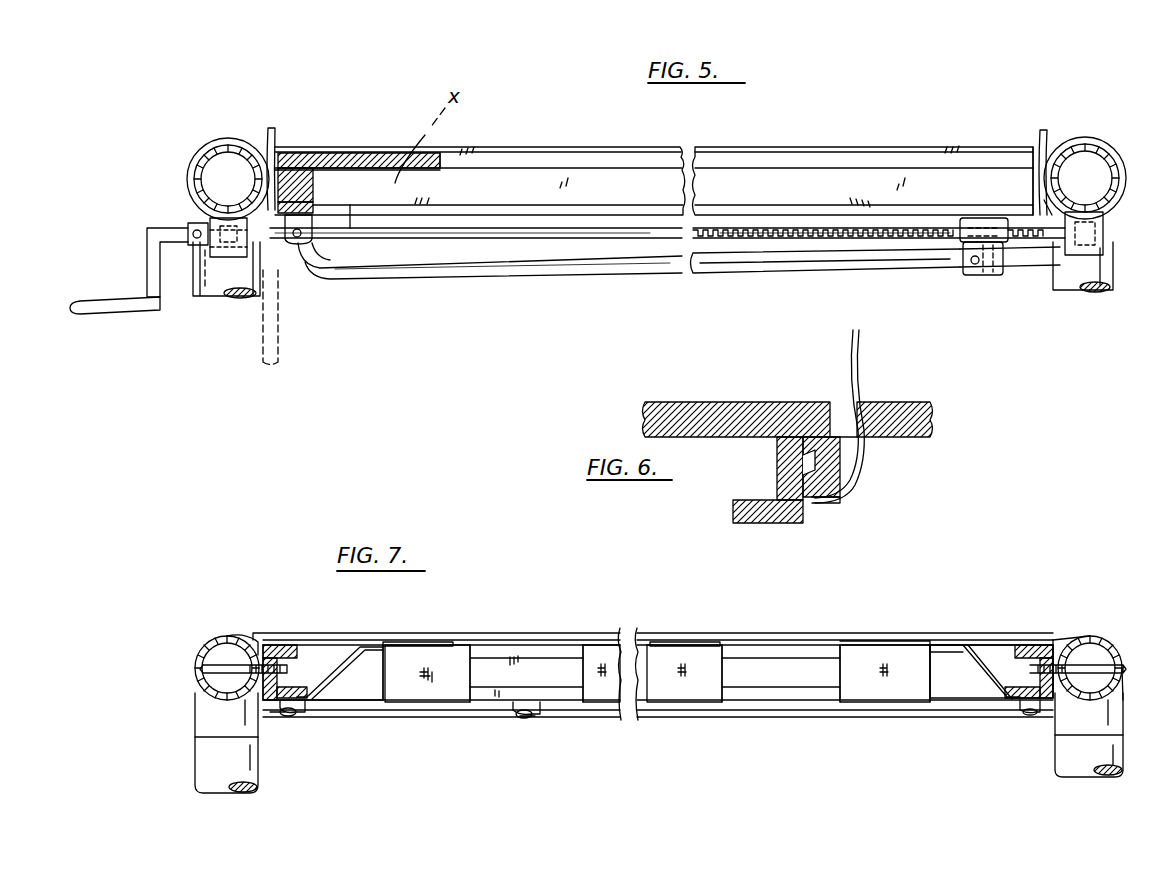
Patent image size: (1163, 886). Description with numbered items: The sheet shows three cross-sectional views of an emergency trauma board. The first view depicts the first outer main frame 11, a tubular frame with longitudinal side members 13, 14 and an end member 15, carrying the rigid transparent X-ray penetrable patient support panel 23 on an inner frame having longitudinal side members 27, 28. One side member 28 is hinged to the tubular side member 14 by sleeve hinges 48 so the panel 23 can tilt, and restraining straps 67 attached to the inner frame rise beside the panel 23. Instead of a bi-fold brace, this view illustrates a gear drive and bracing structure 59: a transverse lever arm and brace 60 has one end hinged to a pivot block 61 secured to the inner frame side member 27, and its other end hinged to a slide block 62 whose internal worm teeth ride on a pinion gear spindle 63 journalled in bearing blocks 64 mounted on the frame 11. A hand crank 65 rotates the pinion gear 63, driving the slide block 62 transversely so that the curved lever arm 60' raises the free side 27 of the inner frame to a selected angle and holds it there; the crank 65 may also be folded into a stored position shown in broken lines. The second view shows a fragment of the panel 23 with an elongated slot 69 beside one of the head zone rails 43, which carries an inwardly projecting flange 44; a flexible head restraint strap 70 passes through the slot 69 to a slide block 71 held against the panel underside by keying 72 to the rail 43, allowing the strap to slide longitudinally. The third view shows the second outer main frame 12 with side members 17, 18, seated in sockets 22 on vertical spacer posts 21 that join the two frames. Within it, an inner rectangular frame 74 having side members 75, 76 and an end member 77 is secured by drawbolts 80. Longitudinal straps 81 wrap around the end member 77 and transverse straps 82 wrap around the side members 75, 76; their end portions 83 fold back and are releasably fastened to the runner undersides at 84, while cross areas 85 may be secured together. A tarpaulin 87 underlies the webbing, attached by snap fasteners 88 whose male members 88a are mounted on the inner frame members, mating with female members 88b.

In FIG. 5, the first outer main frame 11 is at (913, 130).
In FIG. 7, the second outer main frame 12 is at (200, 643).
In FIG. 5, the side member 13 is at (208, 152).
In FIG. 5, the side member 14 is at (1133, 138).
In FIG. 5, the end member 15 is at (770, 147).
In FIG. 7, the side member 17 is at (1100, 640).
In FIG. 7, the side member 18 is at (227, 640).
In FIG. 7, the spacer posts 21 is at (258, 790).
In FIG. 7, the sockets 22 is at (195, 730).
In FIG. 5, the patient support panel 23 is at (553, 147).
In FIG. 6, the patient support panel 23 is at (722, 400).
In FIG. 5, the side member 27 is at (315, 178).
In FIG. 5, the side member 28 is at (1058, 142).
In FIG. 6, the head zone rails 43 is at (785, 460).
In FIG. 6, the flanges 44 is at (770, 523).
In FIG. 5, the sleeve hinges 48 is at (1128, 174).
In FIG. 5, the gear drive and bracing structure 59 is at (273, 252).
In FIG. 5, the lever arm and brace 60 is at (870, 278).
In FIG. 5, the curved lever arm 60' is at (490, 281).
In FIG. 5, the pivot block 61 is at (300, 248).
In FIG. 5, the slide block 62 is at (980, 277).
In FIG. 5, the pinion gear spindle 63 is at (848, 240).
In FIG. 5, the bearing blocks 64 is at (228, 255).
In FIG. 5, the hand crank 65 is at (145, 256).
In FIG. 5, the flexible straps 67 is at (275, 130).
In FIG. 6, the slots 69 is at (838, 400).
In FIG. 6, the head restraint straps 70 is at (860, 370).
In FIG. 6, the slide blocks 71 is at (838, 468).
In FIG. 6, the keying 72 is at (845, 498).
In FIG. 7, the inner rectangular frame 74 is at (990, 648).
In FIG. 7, the side member 75 is at (1042, 655).
In FIG. 7, the side member 76 is at (282, 650).
In FIG. 7, the end member 77 is at (375, 680).
In FIG. 7, the drawbolts 80 is at (210, 688).
In FIG. 7, the longitudinal straps 81 is at (440, 636).
In FIG. 7, the transverse straps 82 is at (790, 637).
In FIG. 7, the end portions 83 is at (332, 680).
In FIG. 7, the securing location 84 is at (365, 648).
In FIG. 7, the cross areas 85 is at (900, 640).
In FIG. 7, the tarpaulin 87 is at (563, 717).
In FIG. 7, the snap fasteners 88 is at (308, 715).
In FIG. 7, the male snap members 88a is at (272, 715).
In FIG. 7, the guide clip 88b is at (520, 717).